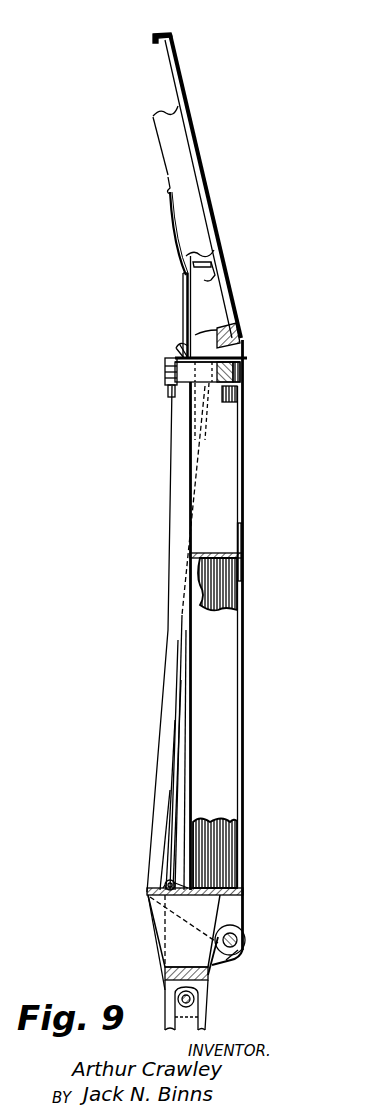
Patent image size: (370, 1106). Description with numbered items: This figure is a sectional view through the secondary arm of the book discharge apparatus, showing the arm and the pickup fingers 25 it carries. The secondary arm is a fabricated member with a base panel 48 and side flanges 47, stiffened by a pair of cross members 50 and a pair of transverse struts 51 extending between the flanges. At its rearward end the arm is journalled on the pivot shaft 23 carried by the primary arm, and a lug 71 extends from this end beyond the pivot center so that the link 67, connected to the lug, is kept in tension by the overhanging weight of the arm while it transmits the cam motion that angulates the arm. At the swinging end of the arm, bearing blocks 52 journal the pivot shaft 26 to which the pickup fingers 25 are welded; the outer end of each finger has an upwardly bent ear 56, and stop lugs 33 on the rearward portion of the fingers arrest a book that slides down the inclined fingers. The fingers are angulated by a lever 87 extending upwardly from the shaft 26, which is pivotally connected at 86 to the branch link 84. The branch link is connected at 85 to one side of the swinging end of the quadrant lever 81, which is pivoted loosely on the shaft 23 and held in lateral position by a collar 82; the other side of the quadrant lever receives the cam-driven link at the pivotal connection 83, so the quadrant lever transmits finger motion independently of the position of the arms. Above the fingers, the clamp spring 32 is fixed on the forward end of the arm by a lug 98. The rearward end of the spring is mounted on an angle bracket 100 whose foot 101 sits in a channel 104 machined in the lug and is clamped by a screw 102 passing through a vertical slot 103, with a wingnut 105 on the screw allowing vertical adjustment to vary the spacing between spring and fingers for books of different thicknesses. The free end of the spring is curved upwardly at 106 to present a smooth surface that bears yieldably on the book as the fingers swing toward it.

The upwardly bent ear 56 is at (163, 34).
The pickup fingers 25 is at (210, 190).
The curved free end of clamp spring 106 is at (167, 194).
The clamp spring 32 is at (174, 230).
The angle bracket 100 is at (183, 292).
The stop lugs 33 is at (207, 280).
The lever 87 is at (200, 333).
The pivotal connection 86 is at (178, 356).
The pivot shaft 26 is at (241, 345).
The channel 104 is at (241, 358).
The foot 101 is at (170, 358).
The screw 102 is at (165, 371).
The vertical slot 103 is at (166, 380).
The wingnut 105 is at (171, 397).
The bearing blocks 52 is at (238, 393).
The lug 98 is at (212, 390).
The base panel 48 is at (244, 526).
The side flanges 47 is at (218, 703).
The branch link 84 is at (172, 537).
The cross members 50 is at (214, 553).
The transverse struts 51 is at (220, 595).
The pivotal connection 85 is at (165, 884).
The lug 71 is at (170, 938).
The collar 82 is at (238, 930).
The pivot shaft 23 is at (245, 943).
The quadrant lever 81 is at (220, 960).
The link 67 is at (205, 1027).
The pivotal connection 83 is at (195, 1000).